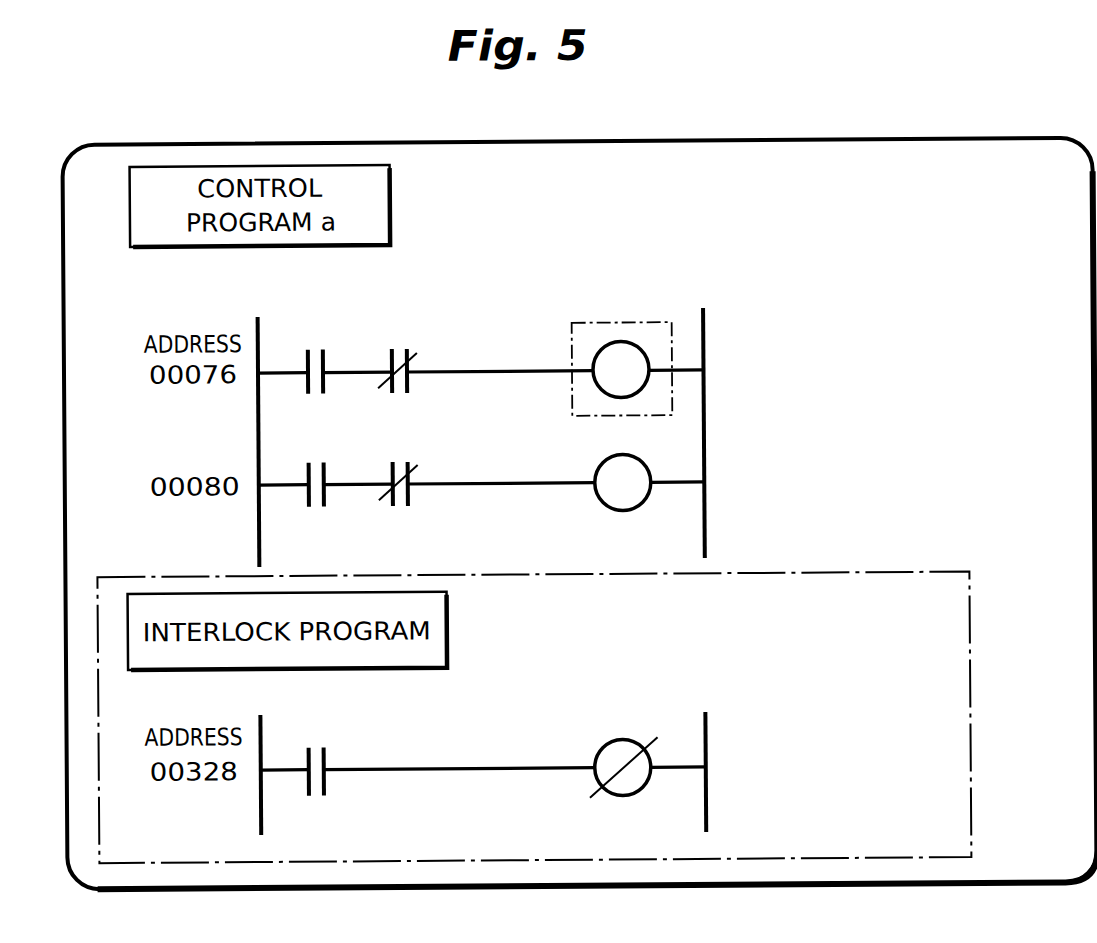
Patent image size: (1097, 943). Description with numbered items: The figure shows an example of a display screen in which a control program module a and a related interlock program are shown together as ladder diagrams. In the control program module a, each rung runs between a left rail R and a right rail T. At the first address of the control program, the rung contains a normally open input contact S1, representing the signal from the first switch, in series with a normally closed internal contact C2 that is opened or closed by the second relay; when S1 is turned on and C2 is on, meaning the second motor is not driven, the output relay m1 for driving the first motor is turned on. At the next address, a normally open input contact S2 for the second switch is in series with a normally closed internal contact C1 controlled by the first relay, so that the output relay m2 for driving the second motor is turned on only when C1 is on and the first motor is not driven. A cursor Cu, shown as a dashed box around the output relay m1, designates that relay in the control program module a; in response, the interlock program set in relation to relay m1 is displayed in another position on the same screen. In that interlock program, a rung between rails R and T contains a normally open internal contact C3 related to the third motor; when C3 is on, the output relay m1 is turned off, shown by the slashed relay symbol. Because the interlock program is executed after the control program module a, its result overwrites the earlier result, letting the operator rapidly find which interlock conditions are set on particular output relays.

The cursor Cu is at (673, 381).
The power rail R is at (258, 557).
The power rail T is at (704, 553).
The input contact S1 is at (315, 354).
The input contact S2 is at (316, 469).
The internal contact C1 is at (398, 468).
The internal contact C2 is at (398, 353).
The internal contact C3 is at (314, 754).
The output relay m1 is at (622, 569).
The output relay m2 is at (623, 482).